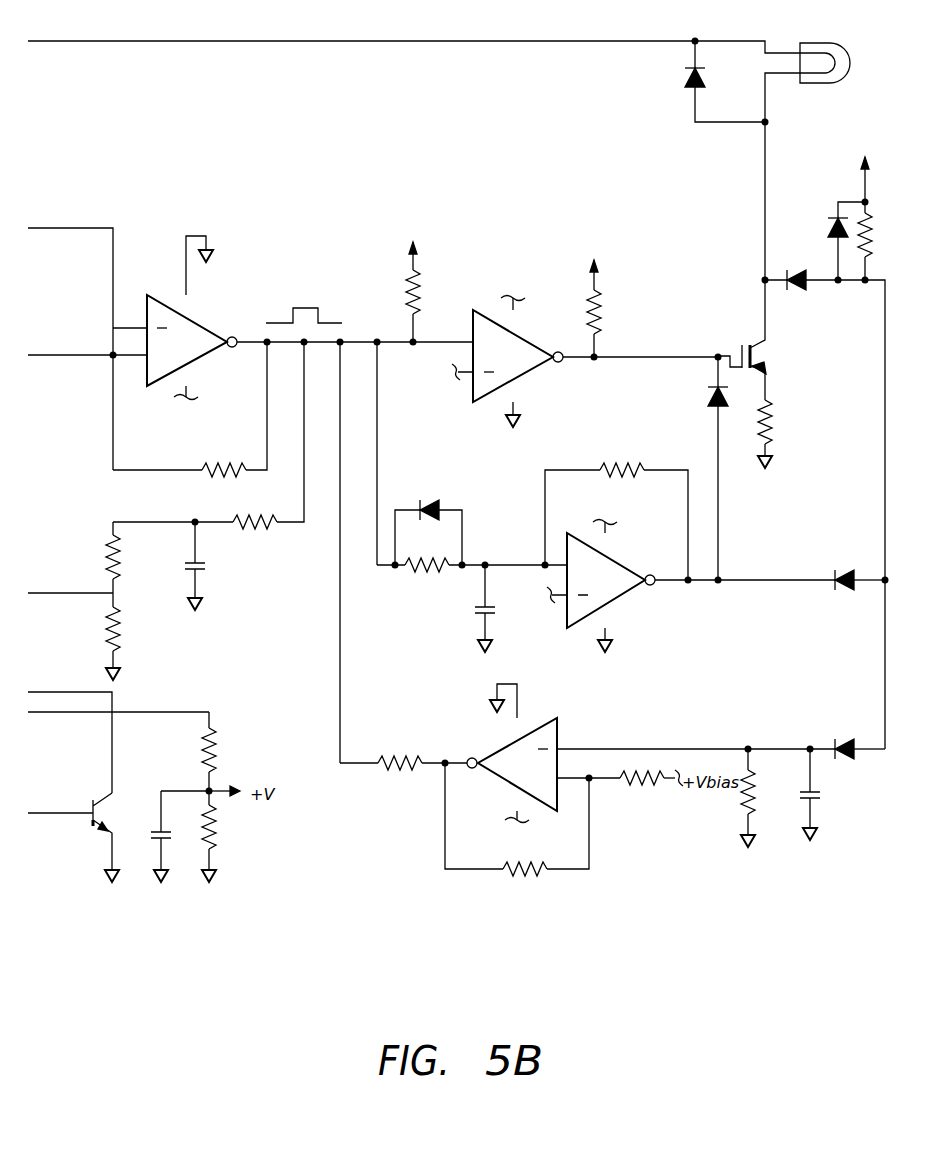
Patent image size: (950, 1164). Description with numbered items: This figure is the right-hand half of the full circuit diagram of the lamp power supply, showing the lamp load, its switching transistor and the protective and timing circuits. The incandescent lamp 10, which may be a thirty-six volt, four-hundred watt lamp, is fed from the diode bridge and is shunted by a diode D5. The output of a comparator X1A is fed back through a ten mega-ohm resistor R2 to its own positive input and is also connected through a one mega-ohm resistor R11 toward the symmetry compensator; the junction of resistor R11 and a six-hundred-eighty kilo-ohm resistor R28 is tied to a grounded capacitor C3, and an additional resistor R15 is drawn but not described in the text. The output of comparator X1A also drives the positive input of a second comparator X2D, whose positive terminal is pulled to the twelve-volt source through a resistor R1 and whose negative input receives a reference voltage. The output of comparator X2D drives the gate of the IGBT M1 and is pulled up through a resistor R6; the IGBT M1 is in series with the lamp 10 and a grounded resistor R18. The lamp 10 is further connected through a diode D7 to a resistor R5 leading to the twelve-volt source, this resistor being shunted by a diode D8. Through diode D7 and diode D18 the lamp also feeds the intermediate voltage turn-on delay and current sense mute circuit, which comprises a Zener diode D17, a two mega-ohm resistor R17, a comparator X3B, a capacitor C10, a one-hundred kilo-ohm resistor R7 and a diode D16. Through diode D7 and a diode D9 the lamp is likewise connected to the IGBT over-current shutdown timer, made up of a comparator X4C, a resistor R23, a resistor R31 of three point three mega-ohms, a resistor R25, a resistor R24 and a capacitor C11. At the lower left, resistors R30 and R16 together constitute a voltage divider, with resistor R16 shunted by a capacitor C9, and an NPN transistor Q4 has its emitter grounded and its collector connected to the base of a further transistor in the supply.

The incandescent lamp 10 is at (841, 50).
The diode D5 is at (708, 80).
The diode D7 is at (798, 266).
The diode D8 is at (830, 223).
The resistor R5 is at (872, 246).
The IGBT M1 is at (772, 352).
The grounded resistor R18 is at (778, 428).
The Zener diode D17 is at (708, 400).
The second comparator X2D is at (522, 341).
The resistor R1 is at (422, 301).
The resistor R6 is at (602, 305).
The comparator X1A is at (200, 329).
The resistor R2 is at (230, 468).
The resistor R11 is at (248, 518).
The grounded capacitor C3 is at (210, 572).
The resistor R28 is at (118, 575).
The resistor R15 is at (120, 640).
The resistor R30 is at (215, 749).
The resistor R16 is at (218, 844).
The capacitor C9 is at (172, 831).
The NPN transistor Q4 is at (105, 806).
The resistor R7 is at (426, 580).
The diode D16 is at (428, 505).
The capacitor C10 is at (470, 616).
The comparator X3B is at (618, 567).
The resistor R17 is at (616, 466).
The diode D18 is at (840, 572).
The comparator X4C is at (565, 735).
The resistor R25 is at (400, 758).
The resistor R23 is at (648, 788).
The resistor R31 is at (526, 878).
The diode D9 is at (840, 742).
The resistor R24 is at (760, 800).
The capacitor C11 is at (830, 795).